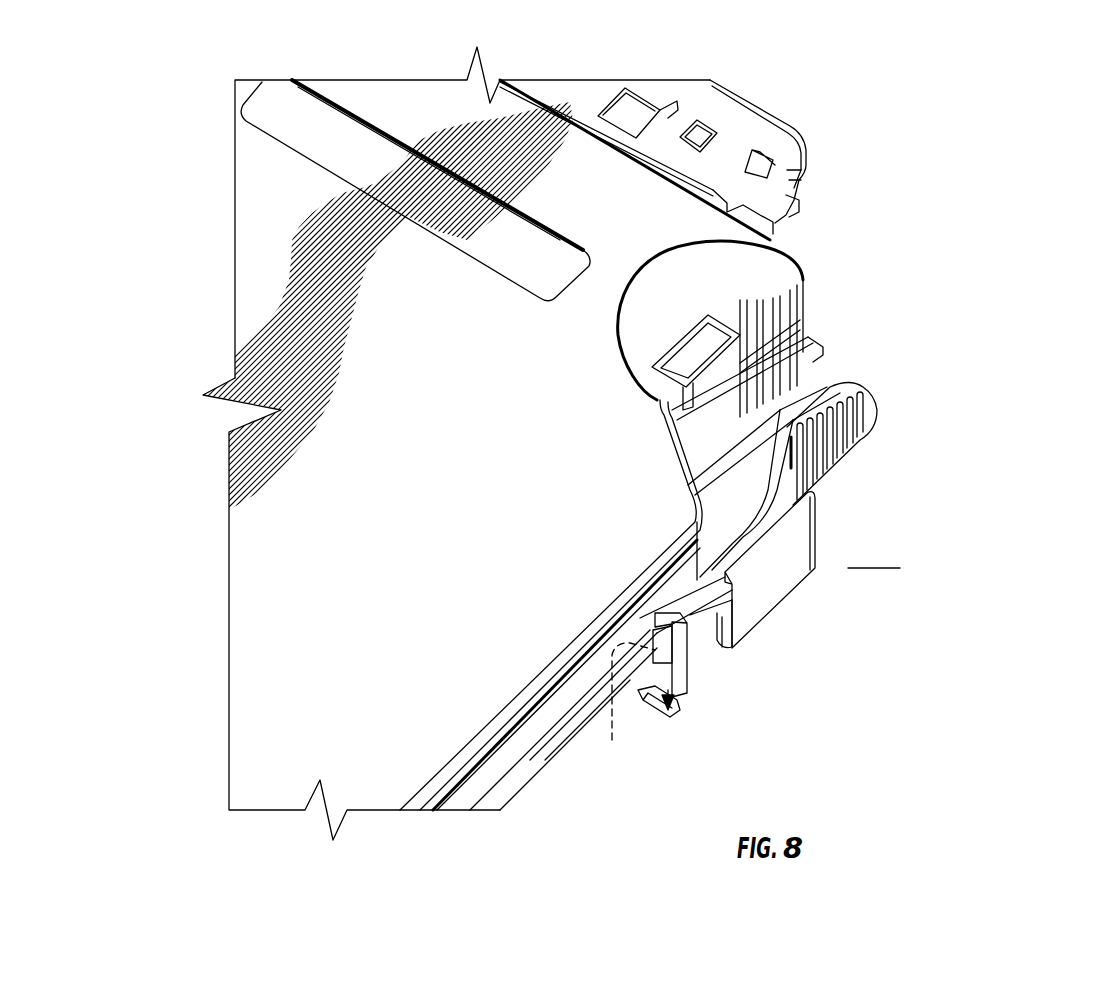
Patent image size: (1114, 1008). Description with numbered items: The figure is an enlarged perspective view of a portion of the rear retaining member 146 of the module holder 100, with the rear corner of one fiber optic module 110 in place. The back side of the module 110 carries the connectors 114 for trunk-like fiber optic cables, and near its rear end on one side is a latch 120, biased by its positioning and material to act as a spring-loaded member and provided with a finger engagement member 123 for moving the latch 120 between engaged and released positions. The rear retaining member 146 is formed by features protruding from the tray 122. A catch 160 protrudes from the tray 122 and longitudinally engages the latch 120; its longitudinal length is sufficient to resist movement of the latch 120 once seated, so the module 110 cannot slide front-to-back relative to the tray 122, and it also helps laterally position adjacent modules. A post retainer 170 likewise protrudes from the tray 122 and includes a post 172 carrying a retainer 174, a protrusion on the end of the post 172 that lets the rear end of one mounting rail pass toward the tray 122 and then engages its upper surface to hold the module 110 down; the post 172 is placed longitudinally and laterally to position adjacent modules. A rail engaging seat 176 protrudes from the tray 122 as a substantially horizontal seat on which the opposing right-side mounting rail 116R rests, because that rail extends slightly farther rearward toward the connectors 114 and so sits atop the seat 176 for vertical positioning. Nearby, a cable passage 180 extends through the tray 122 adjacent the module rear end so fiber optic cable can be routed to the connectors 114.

The module holder 100 is at (878, 314).
The module 110 is at (407, 418).
The connectors 114 is at (814, 118).
The right rail 116R is at (517, 743).
The latch 120 is at (710, 605).
The tray 122 is at (966, 486).
The finger engagement member 123 is at (873, 424).
The rear retaining member 146 is at (858, 568).
The catch 160 is at (787, 565).
The post retainer 170 is at (670, 720).
The post 172 is at (682, 667).
The retainer 174 is at (625, 608).
The rail engaging seat 176 is at (626, 705).
The cable passage 180 is at (1037, 552).